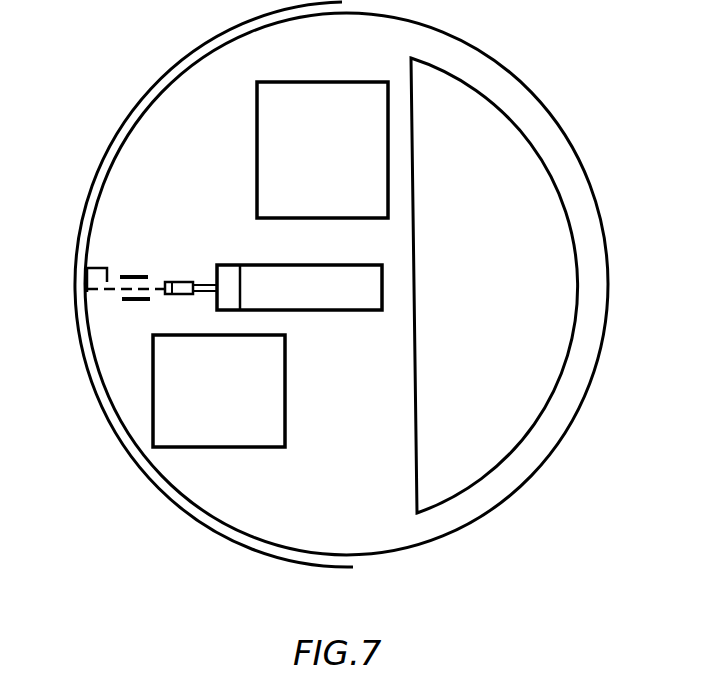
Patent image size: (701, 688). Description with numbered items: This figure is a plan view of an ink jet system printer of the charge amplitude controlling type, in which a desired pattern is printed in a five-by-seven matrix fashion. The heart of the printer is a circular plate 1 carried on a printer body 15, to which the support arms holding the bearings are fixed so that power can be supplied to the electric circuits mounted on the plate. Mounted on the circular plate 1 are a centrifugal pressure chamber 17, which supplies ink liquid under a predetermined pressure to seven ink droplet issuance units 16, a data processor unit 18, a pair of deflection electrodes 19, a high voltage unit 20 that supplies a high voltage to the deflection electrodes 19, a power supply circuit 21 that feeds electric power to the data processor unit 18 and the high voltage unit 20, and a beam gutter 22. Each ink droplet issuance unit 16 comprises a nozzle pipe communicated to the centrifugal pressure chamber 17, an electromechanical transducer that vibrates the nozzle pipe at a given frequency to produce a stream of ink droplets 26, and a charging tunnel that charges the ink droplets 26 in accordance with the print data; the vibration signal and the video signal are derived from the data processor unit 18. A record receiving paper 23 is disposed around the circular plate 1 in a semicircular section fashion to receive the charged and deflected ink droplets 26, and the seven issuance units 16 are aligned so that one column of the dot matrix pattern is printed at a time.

The circular plate 1 is at (527, 115).
The printer body 15 is at (140, 305).
The ink droplet issuance unit 16 is at (178, 280).
The centrifugal pressure chamber 17 is at (353, 297).
The data processor unit 18 is at (533, 205).
The deflection electrodes 19 is at (130, 275).
The high voltage unit 20 is at (193, 398).
The power supply circuit 21 is at (357, 108).
The beam gutter 22 is at (86, 273).
The record receiving paper 23 is at (155, 83).
The ink droplets 26 is at (125, 290).